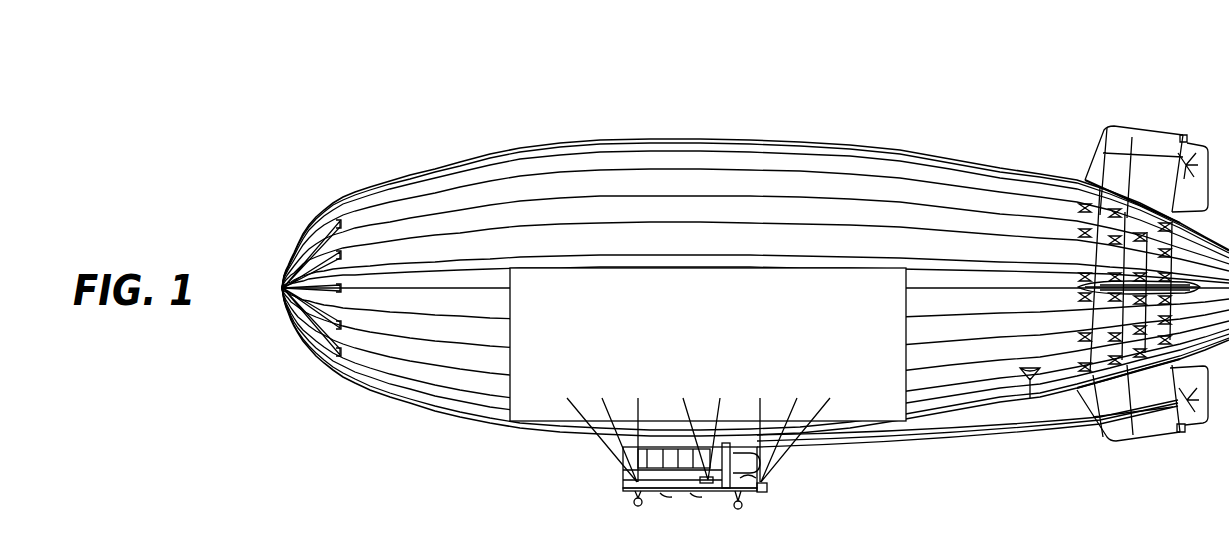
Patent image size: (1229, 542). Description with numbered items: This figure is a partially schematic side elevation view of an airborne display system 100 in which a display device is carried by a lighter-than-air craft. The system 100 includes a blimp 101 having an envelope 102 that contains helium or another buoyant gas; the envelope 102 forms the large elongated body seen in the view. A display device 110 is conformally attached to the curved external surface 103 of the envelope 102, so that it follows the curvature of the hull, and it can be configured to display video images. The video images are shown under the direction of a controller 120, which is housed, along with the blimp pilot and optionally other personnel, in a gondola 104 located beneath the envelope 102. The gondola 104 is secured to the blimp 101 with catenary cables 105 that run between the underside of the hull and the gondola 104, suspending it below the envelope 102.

The airborne display system 100 is at (964, 136).
The blimp 101 is at (515, 162).
The envelope 102 is at (427, 398).
The curved external surface 103 is at (941, 254).
The gondola 104 is at (622, 477).
The catenary cables 105 is at (600, 445).
The display device 110 is at (733, 282).
The controller 120 is at (755, 488).